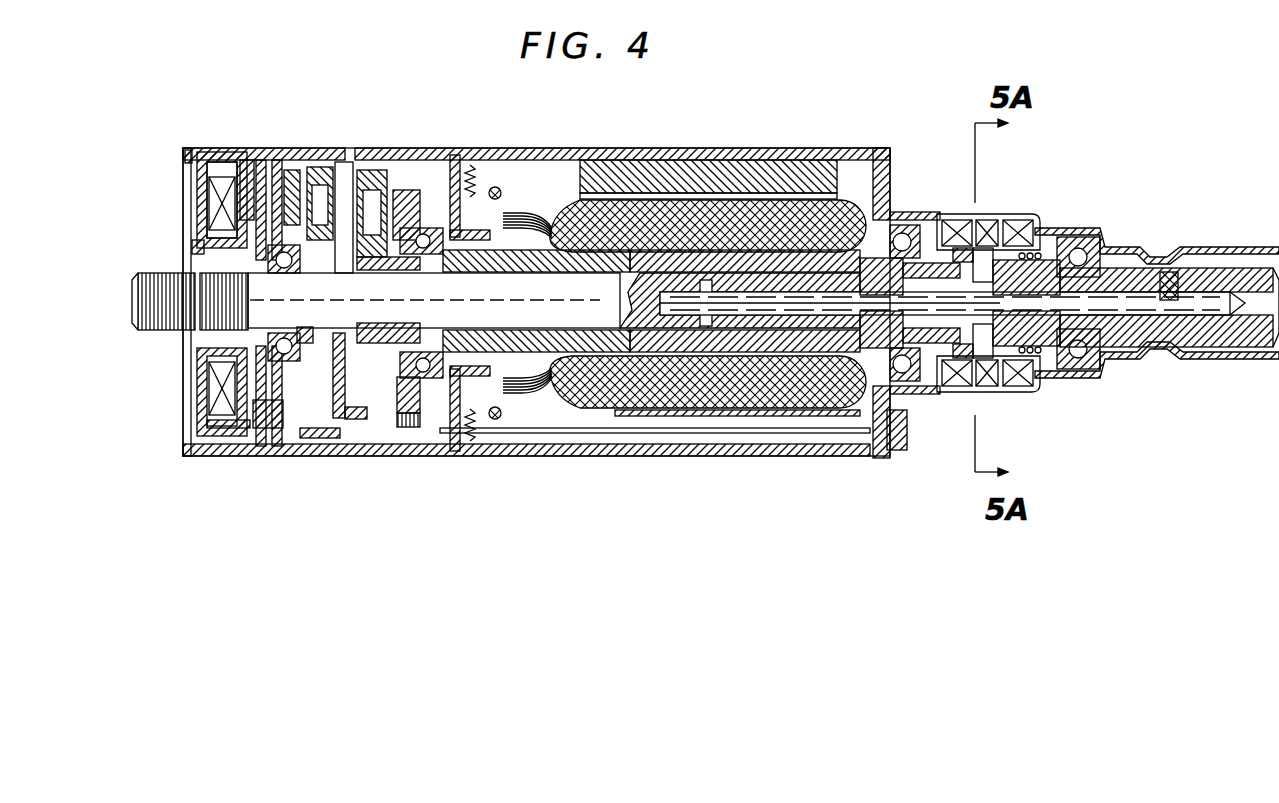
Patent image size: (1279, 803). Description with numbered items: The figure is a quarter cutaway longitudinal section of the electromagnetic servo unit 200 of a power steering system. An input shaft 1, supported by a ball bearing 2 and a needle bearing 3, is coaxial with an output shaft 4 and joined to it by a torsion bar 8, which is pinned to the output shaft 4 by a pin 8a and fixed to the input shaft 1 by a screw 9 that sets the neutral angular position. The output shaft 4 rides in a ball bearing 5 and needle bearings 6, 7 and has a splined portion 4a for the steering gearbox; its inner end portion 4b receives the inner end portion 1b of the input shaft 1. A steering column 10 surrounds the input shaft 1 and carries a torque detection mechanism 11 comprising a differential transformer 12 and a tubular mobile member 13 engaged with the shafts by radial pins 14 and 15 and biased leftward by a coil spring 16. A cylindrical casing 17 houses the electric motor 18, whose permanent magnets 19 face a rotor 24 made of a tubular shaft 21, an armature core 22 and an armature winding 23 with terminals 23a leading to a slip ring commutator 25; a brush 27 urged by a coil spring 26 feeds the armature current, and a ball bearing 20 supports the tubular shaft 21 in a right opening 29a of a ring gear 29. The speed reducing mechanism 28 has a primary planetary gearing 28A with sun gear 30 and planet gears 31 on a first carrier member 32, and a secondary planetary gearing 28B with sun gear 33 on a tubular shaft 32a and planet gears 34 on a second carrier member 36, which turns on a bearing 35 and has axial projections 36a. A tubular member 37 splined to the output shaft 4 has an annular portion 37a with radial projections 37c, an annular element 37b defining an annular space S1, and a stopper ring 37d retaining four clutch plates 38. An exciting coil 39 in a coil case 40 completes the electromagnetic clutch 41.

The input shaft 1 is at (1258, 290).
The axially inner end portion of the input shaft 1b is at (945, 360).
The ball bearing 2 is at (1100, 230).
The needle bearing 3 is at (925, 382).
The output shaft 4 is at (532, 440).
The splined portion 4a is at (170, 323).
The axially inner end portion of the output shaft 4b is at (945, 432).
The ball bearing 5 is at (905, 225).
The needle bearing 6 is at (820, 434).
The needle bearing 7 is at (490, 357).
The torsion bar 8 is at (1105, 318).
The pin 8a is at (660, 434).
The screw 9 is at (1170, 272).
The steering column 10 is at (1075, 238).
The torque detection mechanism 11 is at (1020, 222).
The differential transformer 12 is at (998, 216).
The tubular mobile member 13 is at (940, 214).
The radial pins 14 is at (962, 205).
The radial pins 15 is at (1000, 395).
The coil spring 16 is at (1050, 382).
The cylindrical casing 17 is at (800, 160).
The electric motor 18 is at (865, 148).
The permanent magnets 19 is at (752, 172).
The ball bearing 20 is at (443, 148).
The tubular shaft 21 is at (640, 168).
The armature core 22 is at (668, 175).
The armature winding 23 is at (713, 172).
The terminals 23a is at (545, 165).
The rotor 24 is at (575, 172).
The slip ring commutator 25 is at (503, 215).
The coil spring 26 is at (458, 155).
The brush 27 is at (494, 187).
The speed reducing mechanism 28 is at (333, 166).
The primary planetary gearing 28A is at (372, 170).
The secondary planetary gearing 28B is at (293, 168).
The ring gear 29 is at (405, 190).
The right opening 29a is at (397, 453).
The sun gear 30 is at (373, 443).
The planet gears 31 is at (517, 306).
The first carrier member 32 is at (353, 440).
The tubular shaft 32a is at (307, 440).
The sun gear 33 is at (325, 442).
The planet gears 34 is at (340, 262).
The bearing 35 is at (282, 273).
The second carrier member 36 is at (282, 448).
The axial projections 36a is at (280, 160).
The tubular member 37 is at (197, 210).
The annular portion 37a is at (255, 370).
The annular element 37b is at (205, 150).
The radial projections 37c is at (207, 177).
The stopper ring 37d is at (192, 453).
The clutch plates 38 is at (228, 446).
The exciting coil 39 is at (187, 153).
The coil case 40 is at (192, 245).
The electromagnetic clutch 41 is at (213, 403).
The annular space S1 is at (240, 150).
The electromagnetic servo unit 200 is at (670, 540).